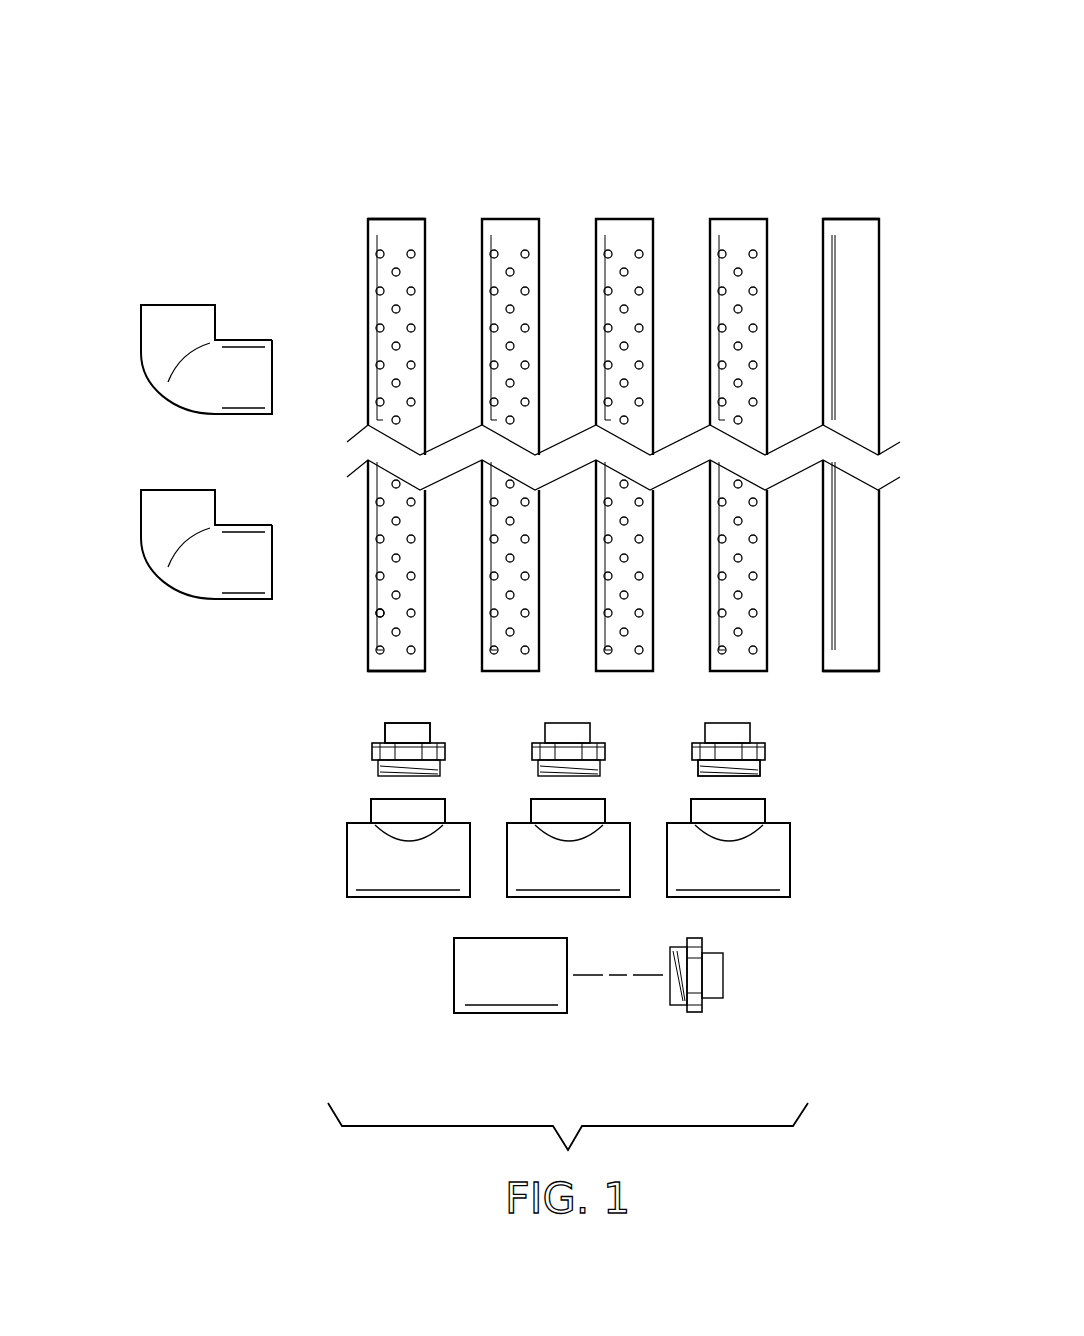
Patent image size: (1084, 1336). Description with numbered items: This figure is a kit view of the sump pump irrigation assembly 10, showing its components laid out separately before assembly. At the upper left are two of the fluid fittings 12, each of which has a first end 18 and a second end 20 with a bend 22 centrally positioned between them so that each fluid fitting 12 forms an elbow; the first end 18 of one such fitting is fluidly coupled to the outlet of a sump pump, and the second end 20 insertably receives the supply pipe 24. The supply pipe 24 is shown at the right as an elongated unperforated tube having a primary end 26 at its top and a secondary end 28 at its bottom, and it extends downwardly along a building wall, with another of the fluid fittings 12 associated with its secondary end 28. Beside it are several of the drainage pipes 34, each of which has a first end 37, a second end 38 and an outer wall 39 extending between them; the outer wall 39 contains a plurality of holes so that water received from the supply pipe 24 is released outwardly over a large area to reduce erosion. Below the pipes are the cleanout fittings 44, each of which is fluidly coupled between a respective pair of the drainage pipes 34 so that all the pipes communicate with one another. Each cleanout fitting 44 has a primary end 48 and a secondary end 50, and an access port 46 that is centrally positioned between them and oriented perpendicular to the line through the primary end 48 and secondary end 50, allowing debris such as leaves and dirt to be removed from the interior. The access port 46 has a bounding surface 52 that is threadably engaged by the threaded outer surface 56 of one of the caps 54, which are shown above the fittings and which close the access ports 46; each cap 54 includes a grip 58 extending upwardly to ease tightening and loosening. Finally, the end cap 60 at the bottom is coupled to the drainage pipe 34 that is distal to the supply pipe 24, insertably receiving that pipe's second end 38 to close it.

The sump pump irrigation assembly 10 is at (336, 168).
The fluid fittings 12 is at (141, 538).
The first end 18 is at (172, 305).
The second end 20 is at (272, 366).
The bend 22 is at (150, 400).
The supply pipe 24 is at (878, 318).
The primary end 26 is at (848, 219).
The secondary end 28 is at (855, 671).
The drainage pipes 34 is at (482, 277).
The first end 37 is at (396, 219).
The second end 38 is at (380, 671).
The outer wall 39 is at (380, 613).
The cleanout fittings 44 is at (510, 898).
The access port 46 is at (370, 787).
The primary end 48 is at (347, 860).
The secondary end 50 is at (473, 838).
The bounding surface 52 is at (745, 820).
The caps 54 is at (445, 752).
The outer surface 56 is at (713, 766).
The grip 58 is at (387, 725).
The end cap 60 is at (509, 1013).